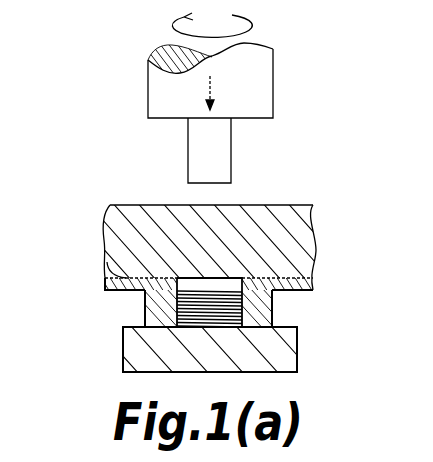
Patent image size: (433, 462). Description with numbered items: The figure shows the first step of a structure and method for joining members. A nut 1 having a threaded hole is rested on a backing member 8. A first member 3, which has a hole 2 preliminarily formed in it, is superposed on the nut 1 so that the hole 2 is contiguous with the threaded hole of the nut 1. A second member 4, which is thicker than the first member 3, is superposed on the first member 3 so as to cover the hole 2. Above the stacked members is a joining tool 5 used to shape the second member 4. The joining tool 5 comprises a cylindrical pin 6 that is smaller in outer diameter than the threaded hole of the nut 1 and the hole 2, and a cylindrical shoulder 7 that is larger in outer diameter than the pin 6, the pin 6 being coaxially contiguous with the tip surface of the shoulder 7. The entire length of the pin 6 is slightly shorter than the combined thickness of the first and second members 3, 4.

The nut 1 is at (275, 307).
The hole 2 is at (107, 262).
The first member 3 is at (113, 290).
The second member 4 is at (300, 250).
The joining tool 5 is at (204, 98).
The cylindrical pin 6 is at (223, 155).
The cylindrical shoulder 7 is at (263, 73).
The backing member 8 is at (283, 349).